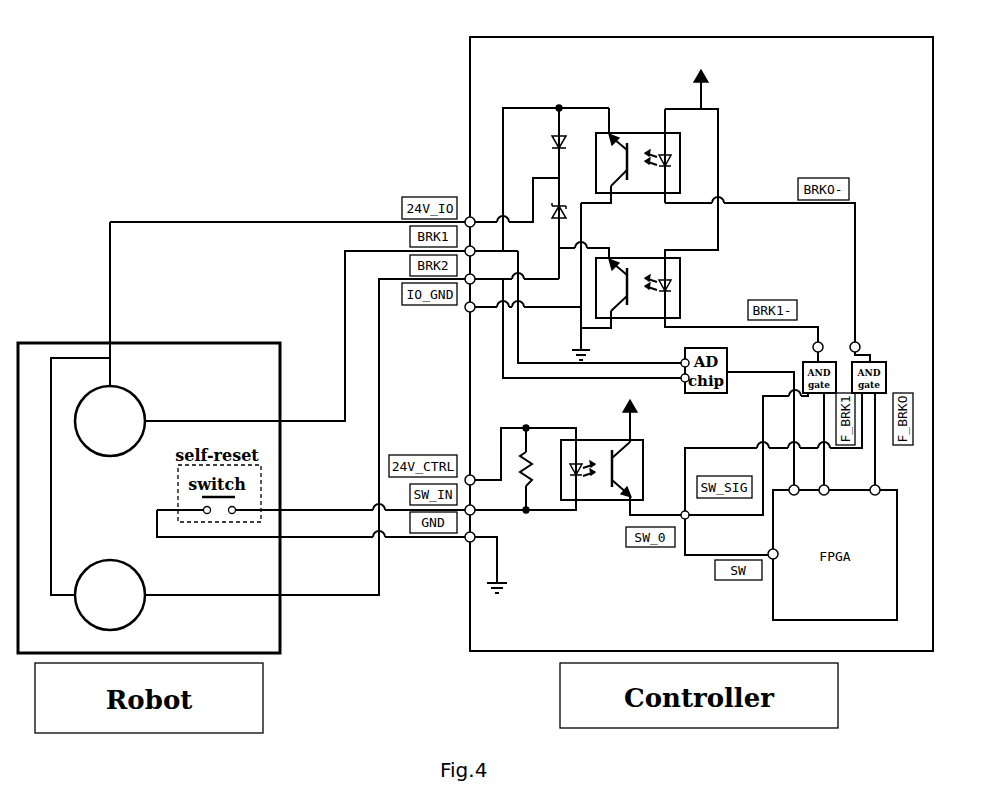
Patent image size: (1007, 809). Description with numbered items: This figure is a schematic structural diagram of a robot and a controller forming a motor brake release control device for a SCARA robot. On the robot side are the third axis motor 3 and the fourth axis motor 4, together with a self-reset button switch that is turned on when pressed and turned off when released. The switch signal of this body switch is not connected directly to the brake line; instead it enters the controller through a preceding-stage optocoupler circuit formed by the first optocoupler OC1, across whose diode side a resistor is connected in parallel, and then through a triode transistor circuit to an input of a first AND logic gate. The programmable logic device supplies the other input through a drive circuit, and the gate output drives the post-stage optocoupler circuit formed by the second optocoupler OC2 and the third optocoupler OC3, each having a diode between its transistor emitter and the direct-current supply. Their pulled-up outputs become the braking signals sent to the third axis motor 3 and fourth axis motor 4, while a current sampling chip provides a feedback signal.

The third axis motor 3 is at (110, 430).
The fourth axis motor 4 is at (110, 604).
The first optocoupler OC1 is at (602, 460).
The second optocoupler OC2 is at (638, 277).
The third optocoupler OC3 is at (638, 152).